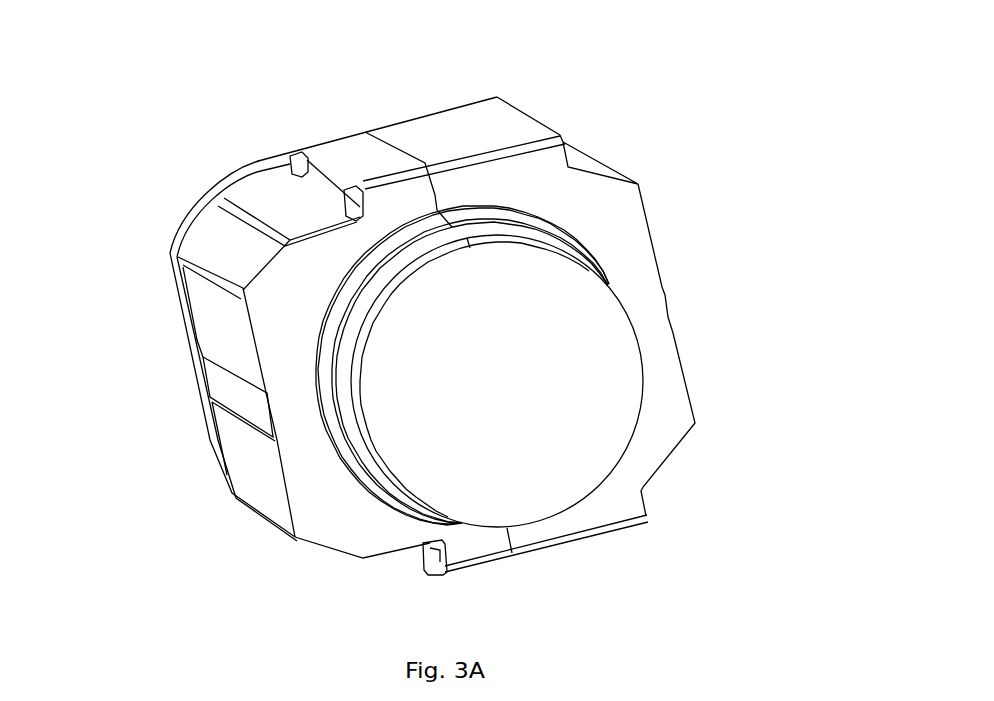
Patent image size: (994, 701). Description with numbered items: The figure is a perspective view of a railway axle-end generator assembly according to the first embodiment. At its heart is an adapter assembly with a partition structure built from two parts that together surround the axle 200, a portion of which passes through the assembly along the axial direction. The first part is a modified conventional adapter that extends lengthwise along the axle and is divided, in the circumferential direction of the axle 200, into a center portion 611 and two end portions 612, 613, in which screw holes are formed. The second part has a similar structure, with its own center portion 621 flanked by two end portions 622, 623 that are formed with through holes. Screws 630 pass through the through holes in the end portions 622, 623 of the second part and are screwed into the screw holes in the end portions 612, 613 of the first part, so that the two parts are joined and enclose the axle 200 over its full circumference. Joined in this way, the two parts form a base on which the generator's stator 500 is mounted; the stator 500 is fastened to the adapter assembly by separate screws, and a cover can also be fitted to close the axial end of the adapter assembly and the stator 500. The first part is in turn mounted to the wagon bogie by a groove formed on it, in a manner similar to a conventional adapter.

The stator 500 is at (222, 203).
The axle 200 is at (541, 453).
The center portion 611 is at (655, 320).
The end portion 612 is at (520, 160).
The end portion 613 is at (593, 520).
The center portion 621 is at (293, 408).
The end portion 622 is at (327, 180).
The end portion 623 is at (477, 543).
The screws 630 is at (352, 200).